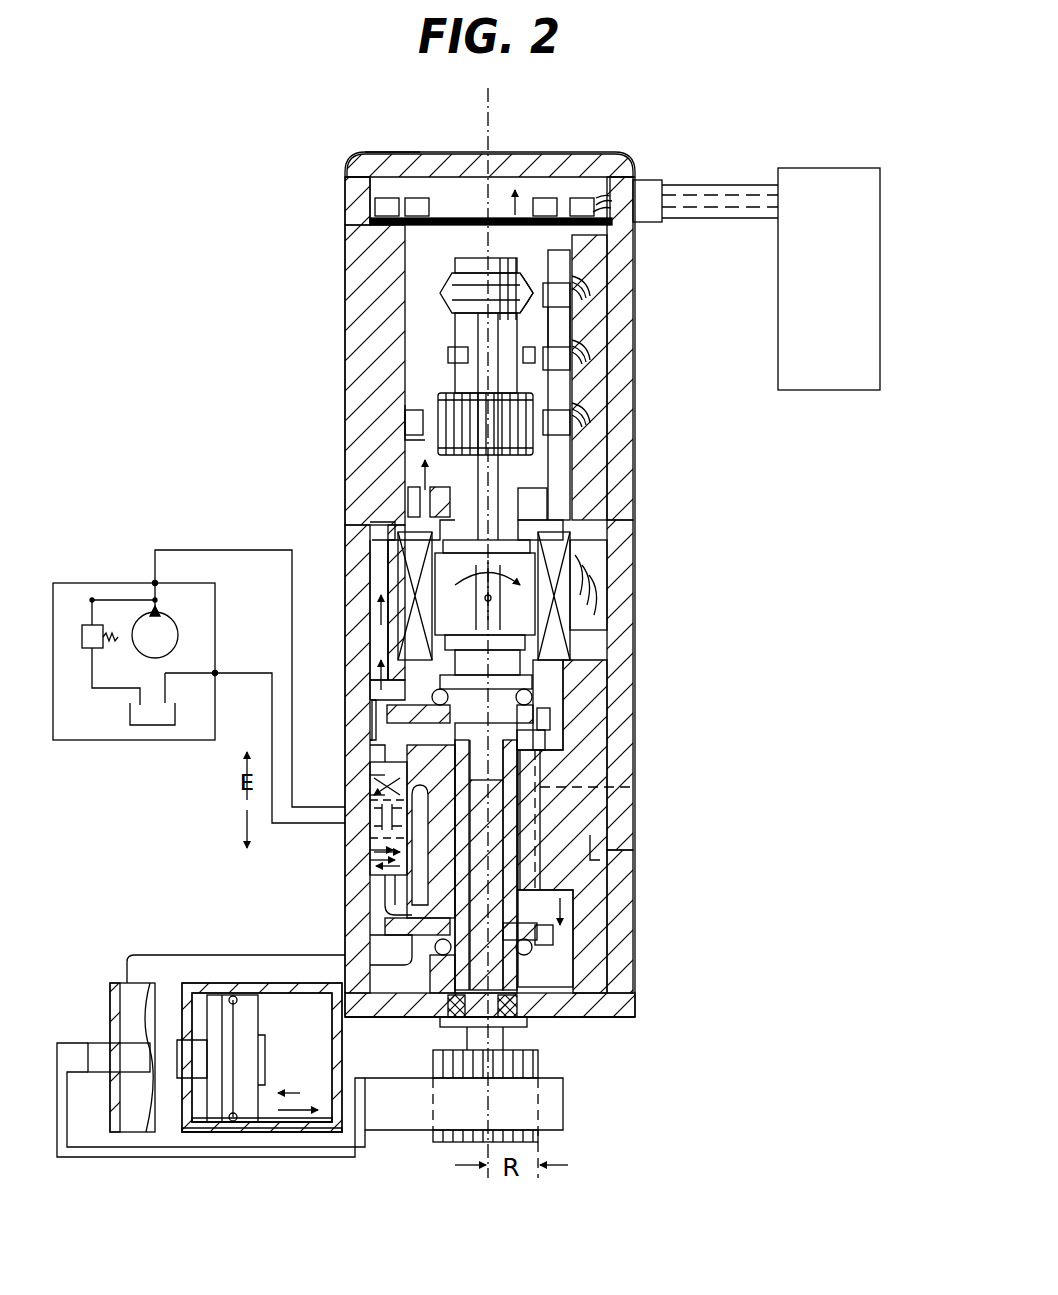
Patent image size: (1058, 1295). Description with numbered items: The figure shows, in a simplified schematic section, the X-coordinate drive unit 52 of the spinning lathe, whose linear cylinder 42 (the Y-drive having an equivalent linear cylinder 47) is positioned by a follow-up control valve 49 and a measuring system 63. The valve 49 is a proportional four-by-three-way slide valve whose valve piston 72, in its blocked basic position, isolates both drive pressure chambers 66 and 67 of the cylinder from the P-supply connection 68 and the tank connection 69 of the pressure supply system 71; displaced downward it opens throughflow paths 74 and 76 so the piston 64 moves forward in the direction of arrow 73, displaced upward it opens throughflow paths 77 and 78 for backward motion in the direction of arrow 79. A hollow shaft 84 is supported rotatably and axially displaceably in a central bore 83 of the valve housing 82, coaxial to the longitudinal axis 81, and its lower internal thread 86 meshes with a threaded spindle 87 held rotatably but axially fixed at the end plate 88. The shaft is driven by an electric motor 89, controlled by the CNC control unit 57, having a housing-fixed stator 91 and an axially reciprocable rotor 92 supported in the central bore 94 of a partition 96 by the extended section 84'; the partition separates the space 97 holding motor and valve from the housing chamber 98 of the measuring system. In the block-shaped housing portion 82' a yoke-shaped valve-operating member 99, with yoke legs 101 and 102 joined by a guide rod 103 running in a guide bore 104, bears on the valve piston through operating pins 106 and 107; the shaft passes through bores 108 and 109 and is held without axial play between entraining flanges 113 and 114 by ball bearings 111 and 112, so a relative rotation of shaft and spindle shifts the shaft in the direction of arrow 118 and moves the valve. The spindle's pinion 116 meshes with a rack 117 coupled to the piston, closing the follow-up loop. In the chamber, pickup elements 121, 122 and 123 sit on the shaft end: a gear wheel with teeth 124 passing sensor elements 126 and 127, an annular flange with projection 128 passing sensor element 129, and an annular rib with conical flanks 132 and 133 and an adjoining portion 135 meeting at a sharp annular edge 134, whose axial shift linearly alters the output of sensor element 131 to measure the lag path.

The X-coordinate drive unit 52 is at (410, 150).
The longitudinal axis 81 is at (492, 112).
The valve housing 82 is at (510, 584).
The housing portion 82' is at (636, 843).
The end plate 88 is at (618, 1013).
The housing chamber 98 is at (400, 240).
The CNC control unit 57 is at (880, 275).
The conical flank 132 is at (452, 275).
The annular edge 134 is at (522, 270).
The third pickup element 123 is at (447, 292).
The chamfer 135 is at (440, 300).
The conical flank 133 is at (452, 320).
The second pickup element 122 is at (448, 353).
The measuring system 63 is at (448, 377).
The first pickup element 121 is at (405, 418).
The sensor element 127 is at (410, 432).
The teeth 124 is at (440, 452).
The sensor element 131 is at (575, 292).
The projection 128 is at (570, 325).
The sensor element 129 is at (575, 357).
The sensor element 126 is at (575, 425).
The extended section of quill shaft 84' is at (545, 490).
The central bore of partition 94 is at (532, 522).
The partition 96 is at (548, 522).
The rotor 92 is at (565, 612).
The stator 91 is at (398, 560).
The electric motor 89 is at (398, 616).
The yoke leg 101 is at (383, 680).
The ball bearing 111 is at (555, 660).
The radial entraining flange 113 is at (432, 695).
The operating pin 106 is at (400, 738).
The space 97 is at (560, 690).
The bore 108 is at (552, 712).
The guide rod 103 is at (546, 738).
The central bore 83 is at (515, 782).
The guide bore 104 is at (628, 782).
The hollow shaft 84 is at (598, 821).
The throughflow path 74 is at (392, 840).
The valve piston 72 is at (385, 740).
The follow-up control valve 49 is at (382, 755).
The throughflow path 77 is at (385, 775).
The throughflow path 78 is at (392, 795).
The throughflow path 76 is at (370, 860).
The operating pin 107 is at (400, 890).
The yoke leg 102 is at (412, 906).
The valve-operating member 99 is at (385, 942).
The ball bearing 112 is at (440, 955).
The bore 109 is at (560, 912).
The direction arrow / piston rod 118 is at (575, 940).
The internal thread 86 is at (532, 955).
The radial entraining flange 114 is at (452, 1005).
The threaded spindle 87 is at (525, 1003).
The pinion 116 is at (540, 1063).
The rack 117 is at (563, 1107).
The pressure supply system 71 is at (110, 740).
The P-supply connection 68 is at (155, 580).
The tank line 69 is at (216, 674).
The piston 64 is at (252, 1018).
The drive pressure chamber 66 is at (265, 1000).
The arrow 73 is at (298, 1086).
The drive pressure chamber 67 is at (118, 1012).
The arrow 79 is at (302, 1112).
The linear cylinder 42 is at (232, 1132).
The linear cylinder 47 is at (262, 1130).